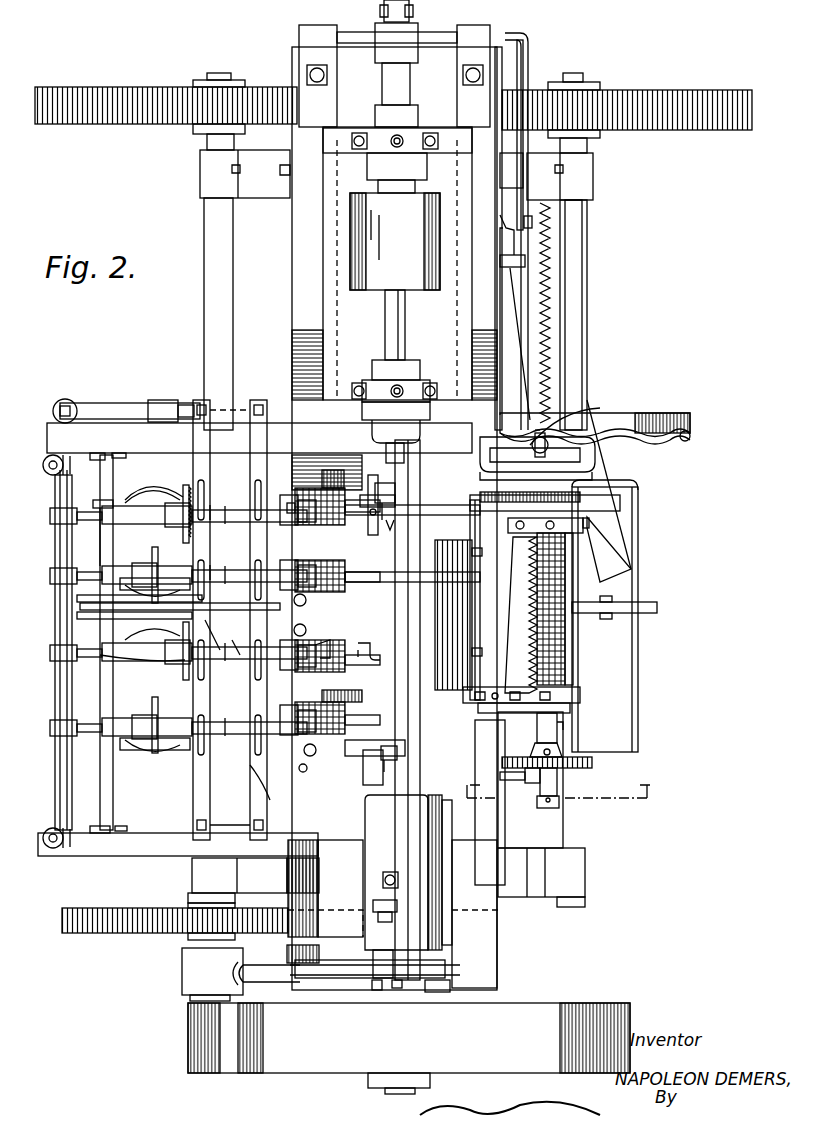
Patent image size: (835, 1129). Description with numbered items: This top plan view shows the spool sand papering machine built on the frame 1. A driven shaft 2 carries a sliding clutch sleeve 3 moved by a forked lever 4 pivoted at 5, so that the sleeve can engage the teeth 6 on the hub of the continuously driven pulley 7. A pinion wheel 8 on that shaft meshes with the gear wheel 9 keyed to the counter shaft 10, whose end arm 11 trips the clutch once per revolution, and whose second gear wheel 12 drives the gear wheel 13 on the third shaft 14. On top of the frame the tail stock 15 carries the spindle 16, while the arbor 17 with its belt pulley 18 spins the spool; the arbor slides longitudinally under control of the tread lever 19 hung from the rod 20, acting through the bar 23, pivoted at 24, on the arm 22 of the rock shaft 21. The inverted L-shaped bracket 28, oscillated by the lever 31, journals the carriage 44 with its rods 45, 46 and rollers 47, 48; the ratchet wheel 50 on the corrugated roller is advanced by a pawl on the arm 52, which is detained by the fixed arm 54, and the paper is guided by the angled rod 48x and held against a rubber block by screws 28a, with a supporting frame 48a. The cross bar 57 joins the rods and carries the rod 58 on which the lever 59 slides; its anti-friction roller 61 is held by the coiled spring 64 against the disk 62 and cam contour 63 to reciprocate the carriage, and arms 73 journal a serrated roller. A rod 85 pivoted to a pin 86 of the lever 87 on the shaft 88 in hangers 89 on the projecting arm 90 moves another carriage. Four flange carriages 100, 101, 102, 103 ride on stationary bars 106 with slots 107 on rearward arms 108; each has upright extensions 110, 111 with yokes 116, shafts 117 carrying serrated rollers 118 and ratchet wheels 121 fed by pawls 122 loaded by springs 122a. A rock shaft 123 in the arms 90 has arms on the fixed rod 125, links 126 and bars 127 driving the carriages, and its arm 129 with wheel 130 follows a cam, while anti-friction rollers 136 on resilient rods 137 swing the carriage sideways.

The frame 1 is at (262, 197).
The driven shaft 2 is at (395, 592).
The sliding clutch sleeve 3 is at (397, 990).
The forked lever 4 is at (558, 788).
The pivot 5 is at (440, 990).
The teeth 6 is at (378, 990).
The pulley 7 is at (553, 1005).
The pinion wheel 8 is at (445, 925).
The gear wheel 9 is at (120, 935).
The counter shaft 10 is at (178, 952).
The arm 11 is at (258, 960).
The second gear wheel 12 is at (101, 90).
The gear wheel 13 is at (648, 92).
The third shaft 14 is at (580, 280).
The tail stock 15 is at (394, 872).
The spindle 16 is at (384, 800).
The arbor 17 is at (385, 325).
The pulley 18 is at (395, 241).
The tread lever 19 is at (570, 365).
The rod 20 is at (395, 11).
The rock shaft 21 is at (432, 35).
The arm 22 is at (529, 60).
The bar 23 is at (533, 222).
The pivot 24 is at (500, 247).
The bracket 28 is at (565, 619).
The screws 28a is at (460, 690).
The lever 31 is at (660, 602).
The carriage 44 is at (508, 535).
The rod 45 is at (487, 505).
The rod 46 is at (556, 722).
The roller 47 is at (568, 660).
The angled member 48 is at (515, 581).
The frame 48a is at (638, 540).
The angled rod 48x is at (515, 606).
The ratchet wheel 50 is at (592, 765).
The arm 52 is at (533, 800).
The arm 54 is at (518, 782).
The cross bar 57 is at (592, 468).
The rod 58 is at (512, 445).
The lever 59 is at (554, 436).
The anti-friction roller 61 is at (574, 415).
The disk 62 is at (692, 425).
The cam contour 63 is at (690, 442).
The coiled spring 64 is at (540, 366).
The arms 73 is at (368, 538).
The rod 85 is at (80, 617).
The pin 86 is at (85, 606).
The lever 87 is at (77, 595).
The shaft 88 is at (100, 700).
The hangers 89 is at (105, 452).
The projecting arm 90 is at (255, 639).
The carriage 100 is at (182, 738).
The carriage 101 is at (222, 632).
The carriage 102 is at (178, 572).
The carriage 103 is at (235, 505).
The stationary bars 106 is at (195, 440).
The slot 107 is at (322, 458).
The arms 108 is at (240, 408).
The upright extension 110 is at (290, 550).
The upright extension 111 is at (227, 542).
The yokes 116 is at (303, 566).
The shaft 117 is at (237, 576).
The roller 118 is at (330, 492).
The ratchet wheel 121 is at (188, 500).
The pawl 122 is at (140, 752).
The spring 122a is at (165, 725).
The rock shaft 123 is at (65, 491).
The fixed rod 125 is at (55, 547).
The links 126 is at (88, 568).
The bar 127 is at (120, 505).
The arm 129 is at (105, 408).
The anti-friction wheel 130 is at (160, 400).
The anti-friction roller 136 is at (310, 628).
The resilient rod 137 is at (266, 707).